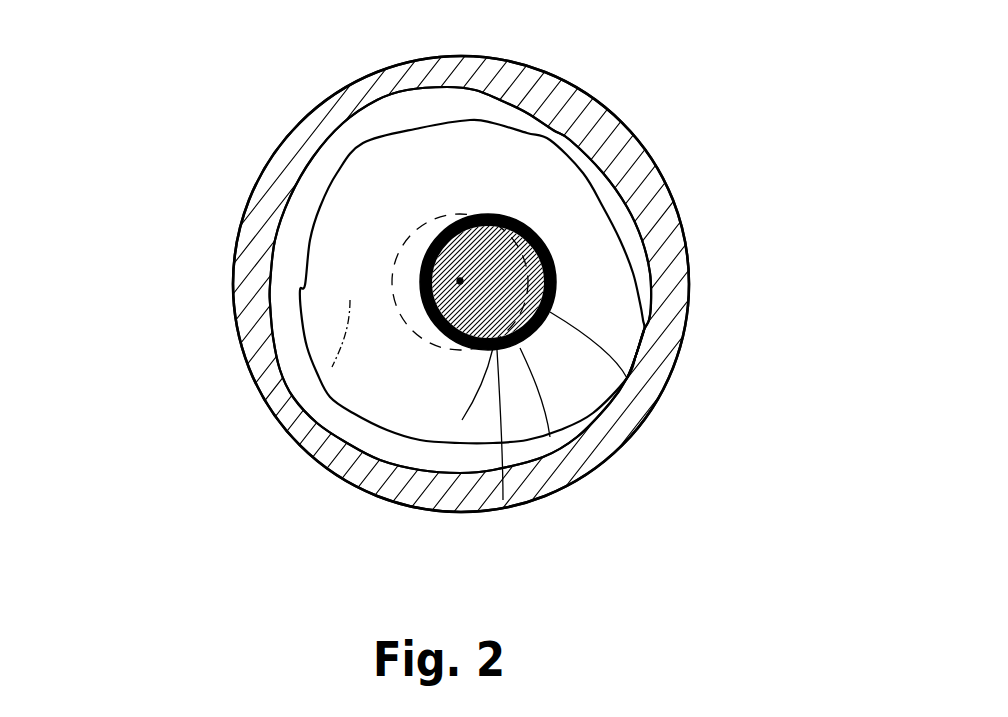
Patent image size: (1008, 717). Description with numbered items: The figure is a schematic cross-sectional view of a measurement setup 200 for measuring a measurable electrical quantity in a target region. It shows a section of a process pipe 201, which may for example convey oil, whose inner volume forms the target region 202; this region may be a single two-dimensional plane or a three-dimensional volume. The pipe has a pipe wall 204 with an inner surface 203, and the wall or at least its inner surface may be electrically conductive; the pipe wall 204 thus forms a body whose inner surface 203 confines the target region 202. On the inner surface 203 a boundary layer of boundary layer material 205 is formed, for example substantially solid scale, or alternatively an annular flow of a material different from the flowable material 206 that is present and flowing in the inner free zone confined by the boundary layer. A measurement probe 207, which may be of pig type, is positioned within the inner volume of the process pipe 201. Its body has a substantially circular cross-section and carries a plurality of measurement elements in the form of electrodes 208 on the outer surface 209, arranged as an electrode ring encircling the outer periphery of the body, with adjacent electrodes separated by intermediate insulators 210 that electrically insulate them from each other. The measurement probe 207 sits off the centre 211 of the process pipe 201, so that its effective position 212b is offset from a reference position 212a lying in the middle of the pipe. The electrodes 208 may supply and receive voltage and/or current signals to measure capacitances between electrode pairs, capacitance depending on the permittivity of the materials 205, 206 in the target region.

The measurement setup 200 is at (204, 581).
The process pipe 201 is at (260, 172).
The target region 202 is at (462, 396).
The inner surface 203 is at (627, 376).
The pipe wall 204 is at (667, 232).
The boundary layer material 205 is at (297, 305).
The flowable material 206 is at (297, 387).
The measurement probe 207 is at (503, 500).
The electrodes 208 is at (627, 378).
The outer surface 209 is at (550, 437).
The intermediate insulators 210 is at (462, 420).
The centre 211 is at (460, 281).
The reference position 212a is at (392, 280).
The effective position 212b is at (425, 258).